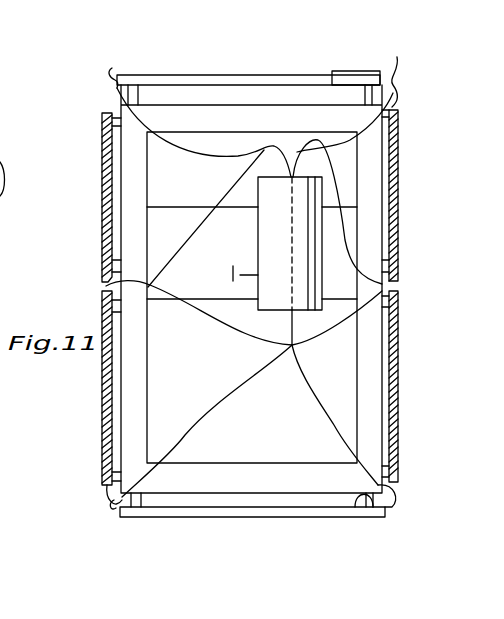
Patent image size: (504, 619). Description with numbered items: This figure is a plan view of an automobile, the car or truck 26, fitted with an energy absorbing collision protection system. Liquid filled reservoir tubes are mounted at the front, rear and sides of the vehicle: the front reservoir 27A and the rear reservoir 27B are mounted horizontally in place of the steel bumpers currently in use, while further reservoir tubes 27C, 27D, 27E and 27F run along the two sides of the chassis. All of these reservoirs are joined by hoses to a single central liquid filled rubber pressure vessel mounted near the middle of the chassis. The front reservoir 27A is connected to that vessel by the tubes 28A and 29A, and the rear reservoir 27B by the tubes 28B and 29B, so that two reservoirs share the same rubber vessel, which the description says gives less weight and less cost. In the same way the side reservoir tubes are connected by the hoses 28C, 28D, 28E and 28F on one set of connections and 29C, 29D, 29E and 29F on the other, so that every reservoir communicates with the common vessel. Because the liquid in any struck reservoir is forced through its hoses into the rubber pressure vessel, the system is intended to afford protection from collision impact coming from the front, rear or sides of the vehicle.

The car or truck 26 is at (150, 200).
The reservoir tube 27A is at (183, 77).
The reservoir tube 27B is at (277, 512).
The reservoir tube 27C is at (104, 398).
The reservoir tube 27D is at (103, 214).
The reservoir tube 27E is at (397, 409).
The reservoir tube 27F is at (396, 243).
The hose 28A is at (106, 67).
The hose 28B is at (116, 508).
The hose 28C is at (108, 490).
The hose 28D is at (222, 331).
The hose 28E is at (170, 256).
The hose 28F is at (118, 100).
The hose 29A is at (386, 71).
The hose 29B is at (394, 510).
The hose 29C is at (368, 507).
The hose 29D is at (294, 345).
The hose 29E is at (295, 136).
The hose 29F is at (330, 78).